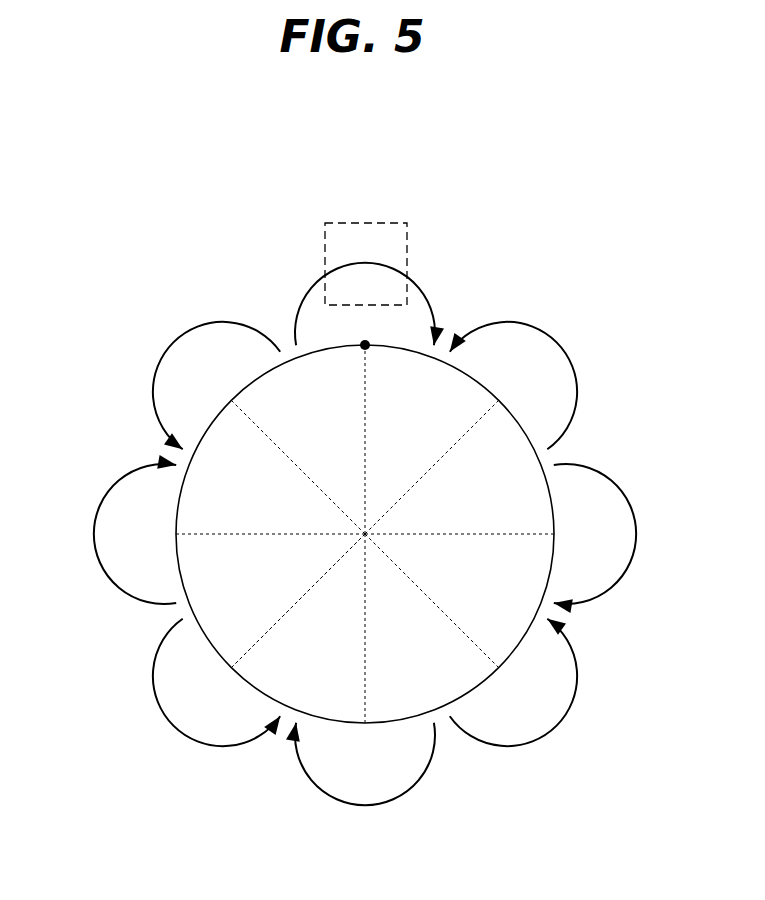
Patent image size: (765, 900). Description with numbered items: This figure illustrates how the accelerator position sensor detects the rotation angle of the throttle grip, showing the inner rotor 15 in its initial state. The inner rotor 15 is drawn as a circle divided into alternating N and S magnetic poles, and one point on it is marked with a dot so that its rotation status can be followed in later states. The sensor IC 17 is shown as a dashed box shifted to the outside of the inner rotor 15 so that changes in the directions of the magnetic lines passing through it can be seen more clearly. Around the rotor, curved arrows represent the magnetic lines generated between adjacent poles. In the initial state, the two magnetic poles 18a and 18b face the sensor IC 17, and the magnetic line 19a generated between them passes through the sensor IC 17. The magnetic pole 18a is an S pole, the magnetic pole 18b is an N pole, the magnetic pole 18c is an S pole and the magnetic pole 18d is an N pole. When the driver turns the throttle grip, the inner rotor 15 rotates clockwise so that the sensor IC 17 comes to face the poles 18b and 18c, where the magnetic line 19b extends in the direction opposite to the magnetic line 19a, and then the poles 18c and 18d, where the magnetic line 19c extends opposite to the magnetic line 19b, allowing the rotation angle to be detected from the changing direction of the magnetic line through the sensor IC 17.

The inner rotor 15 is at (543, 462).
The sensor IC 17 is at (407, 236).
The magnetic pole 18a is at (472, 385).
The magnetic pole 18b is at (293, 363).
The magnetic pole 18c is at (222, 420).
The magnetic pole 18d is at (187, 580).
The magnetic line 19a is at (430, 307).
The magnetic line 19b is at (212, 323).
The magnetic line 19c is at (115, 485).